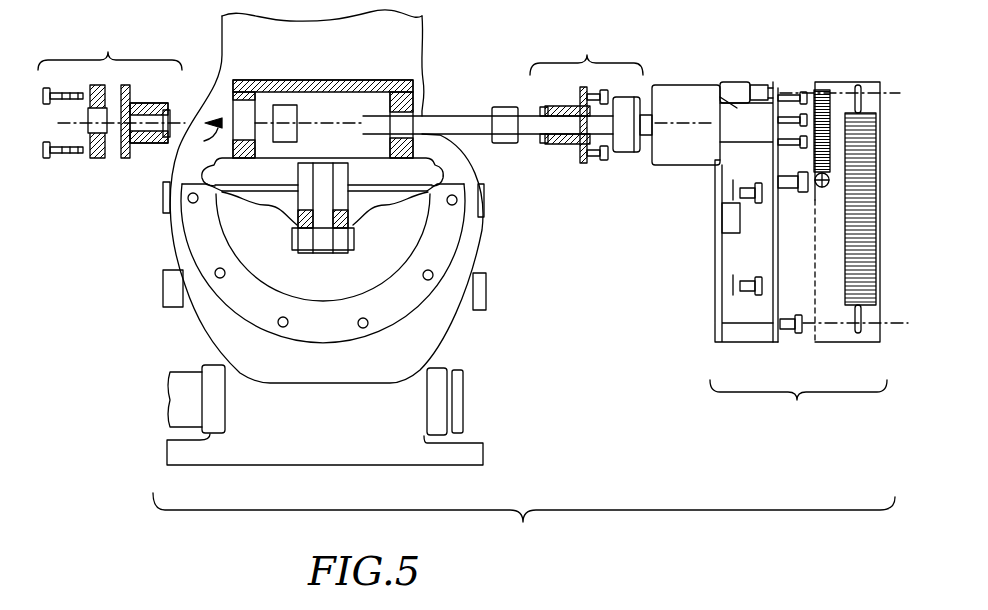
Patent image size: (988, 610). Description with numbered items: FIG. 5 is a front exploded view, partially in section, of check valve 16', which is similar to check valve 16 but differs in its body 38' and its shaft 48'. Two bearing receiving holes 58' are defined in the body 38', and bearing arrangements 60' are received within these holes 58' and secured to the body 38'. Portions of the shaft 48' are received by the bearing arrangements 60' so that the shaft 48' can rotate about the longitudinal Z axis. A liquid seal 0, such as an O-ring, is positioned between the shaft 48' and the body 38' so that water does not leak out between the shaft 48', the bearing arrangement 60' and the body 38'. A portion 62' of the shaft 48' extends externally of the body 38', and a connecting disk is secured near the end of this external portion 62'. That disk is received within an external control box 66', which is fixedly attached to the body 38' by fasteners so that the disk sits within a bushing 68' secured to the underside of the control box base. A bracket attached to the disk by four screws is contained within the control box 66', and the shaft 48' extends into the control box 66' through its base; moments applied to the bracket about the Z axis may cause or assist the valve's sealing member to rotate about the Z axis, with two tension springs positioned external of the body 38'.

The check valve 16 is at (362, 14).
The check valve 16' is at (524, 524).
The body 38' is at (348, 240).
The shaft 48' is at (323, 94).
The bearing receiving holes 58' is at (417, 90).
The bearing arrangements 60' is at (340, 79).
The external portion of the shaft 62' is at (618, 92).
The control box 66' is at (809, 262).
The bushing 68' is at (730, 191).
The liquid seal 0 is at (542, 108).
The Z axis Z is at (205, 137).